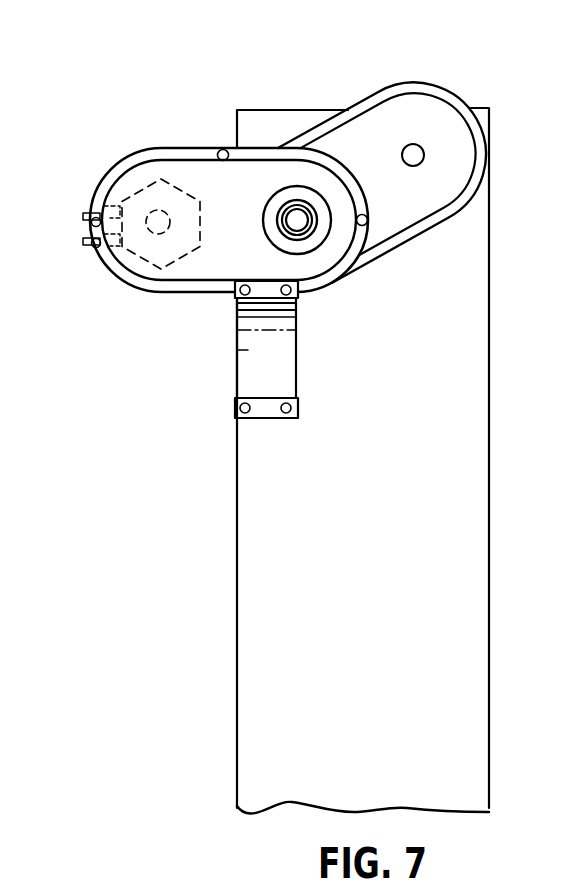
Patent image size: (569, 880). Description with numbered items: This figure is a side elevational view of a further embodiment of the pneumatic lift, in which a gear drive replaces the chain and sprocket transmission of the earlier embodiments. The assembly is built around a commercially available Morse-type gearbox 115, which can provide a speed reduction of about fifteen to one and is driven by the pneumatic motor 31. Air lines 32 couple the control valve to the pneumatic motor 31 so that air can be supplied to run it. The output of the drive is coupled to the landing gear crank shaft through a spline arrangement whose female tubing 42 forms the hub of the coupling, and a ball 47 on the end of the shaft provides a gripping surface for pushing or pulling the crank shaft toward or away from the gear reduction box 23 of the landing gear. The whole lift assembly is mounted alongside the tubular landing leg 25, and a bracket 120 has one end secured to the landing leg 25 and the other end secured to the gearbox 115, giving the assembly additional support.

The gear reduction box 23 is at (447, 89).
The tubular landing leg 25 is at (374, 594).
The pneumatic motor 31 is at (127, 192).
The air lines 32 is at (85, 217).
The female tubing 42 is at (307, 232).
The ball 47 is at (298, 222).
The Morse-type gearbox 115 is at (207, 147).
The bracket 120 is at (247, 365).